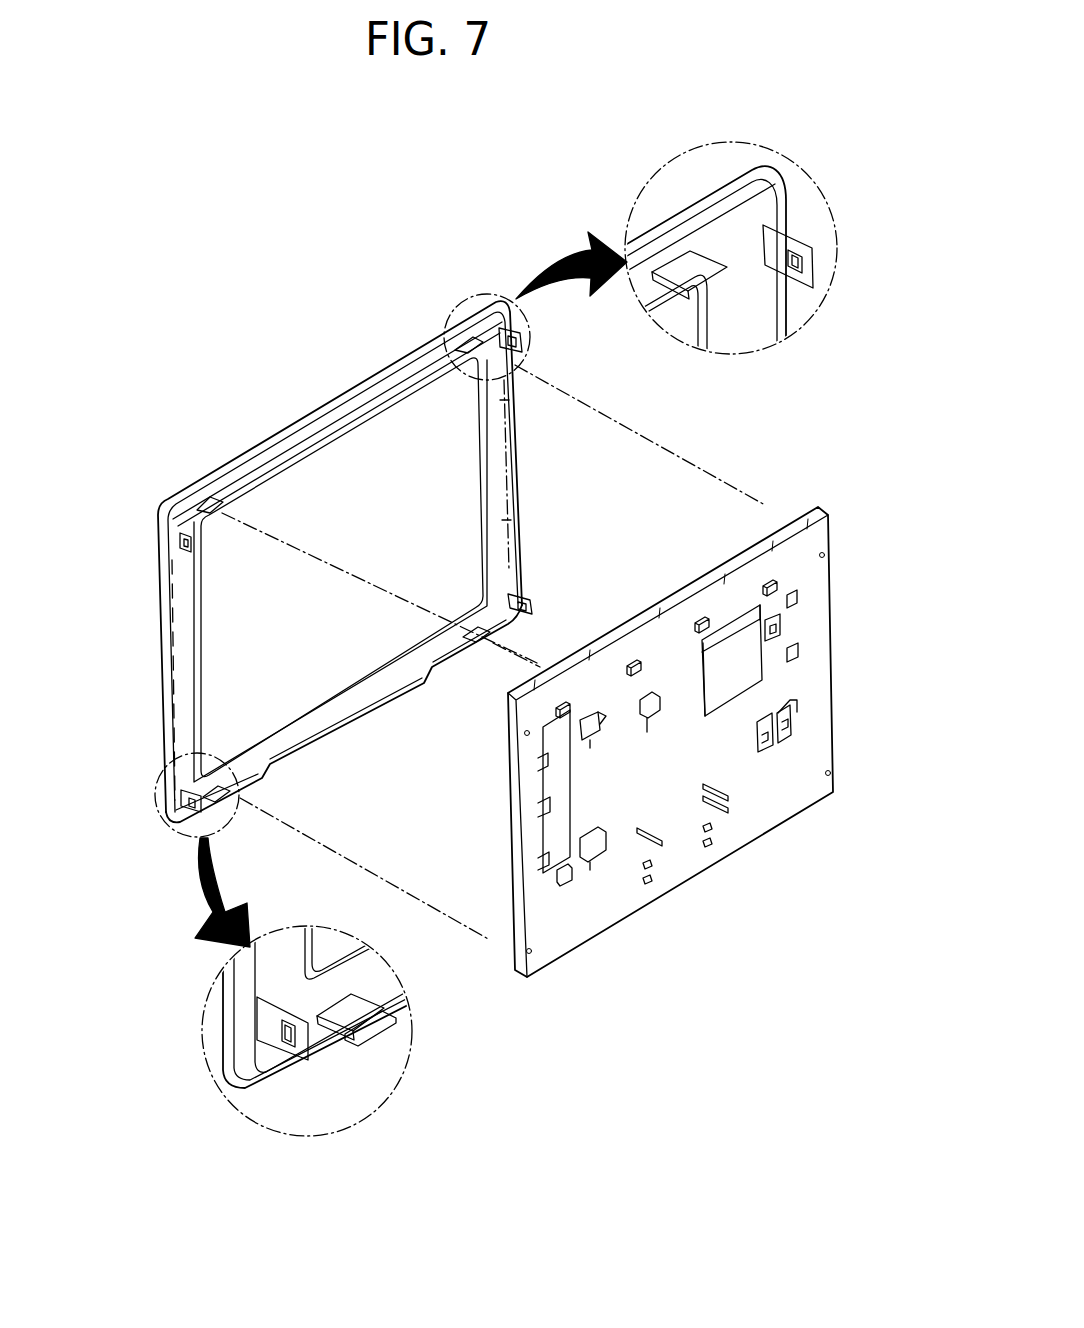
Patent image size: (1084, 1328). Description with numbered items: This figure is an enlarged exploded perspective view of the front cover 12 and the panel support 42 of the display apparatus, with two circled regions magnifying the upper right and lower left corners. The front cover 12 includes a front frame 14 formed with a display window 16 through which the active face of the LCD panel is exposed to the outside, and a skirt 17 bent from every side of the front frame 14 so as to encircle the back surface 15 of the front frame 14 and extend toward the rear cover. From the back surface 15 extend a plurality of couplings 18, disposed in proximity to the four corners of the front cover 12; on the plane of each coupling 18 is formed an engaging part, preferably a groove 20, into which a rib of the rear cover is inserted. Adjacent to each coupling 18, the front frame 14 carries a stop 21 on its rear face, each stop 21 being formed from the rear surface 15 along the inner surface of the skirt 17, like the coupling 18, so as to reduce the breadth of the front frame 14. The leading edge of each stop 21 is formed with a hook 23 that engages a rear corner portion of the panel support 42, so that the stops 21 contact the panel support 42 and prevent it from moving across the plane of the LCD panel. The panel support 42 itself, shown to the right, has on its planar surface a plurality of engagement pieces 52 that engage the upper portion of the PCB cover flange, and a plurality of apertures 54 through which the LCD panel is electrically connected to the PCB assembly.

The front cover 12 is at (101, 593).
The front frame 14 is at (160, 600).
The back surface 15 is at (743, 340).
The display window 16 is at (201, 711).
The skirt 17 is at (170, 658).
The coupling 18 is at (180, 540).
The groove 20 is at (800, 265).
The stop 21 is at (203, 503).
The hook 23 is at (487, 647).
The panel support 42 is at (814, 606).
The engagement piece 52 is at (766, 584).
The aperture 54 is at (790, 714).